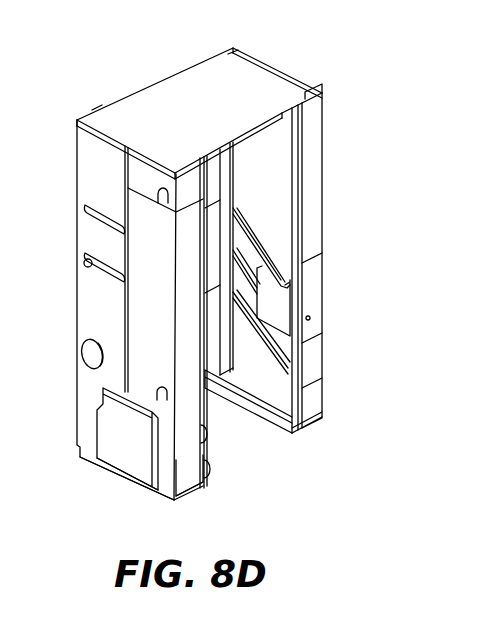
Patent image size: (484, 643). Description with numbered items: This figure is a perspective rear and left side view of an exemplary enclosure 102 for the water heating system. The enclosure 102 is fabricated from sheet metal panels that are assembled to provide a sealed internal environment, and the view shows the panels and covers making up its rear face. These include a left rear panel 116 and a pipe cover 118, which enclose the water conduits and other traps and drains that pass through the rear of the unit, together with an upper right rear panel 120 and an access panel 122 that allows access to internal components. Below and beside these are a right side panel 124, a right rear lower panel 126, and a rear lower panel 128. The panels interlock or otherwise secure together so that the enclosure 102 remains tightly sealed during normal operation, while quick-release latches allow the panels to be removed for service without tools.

The enclosure 102 is at (194, 277).
The left rear panel 116 is at (88, 314).
The pipe cover 118 is at (88, 272).
The upper right rear panel 120 is at (142, 172).
The access panel 122 is at (147, 478).
The right side panel 124 is at (203, 402).
The right rear lower panel 126 is at (188, 467).
The rear lower panel 128 is at (113, 462).